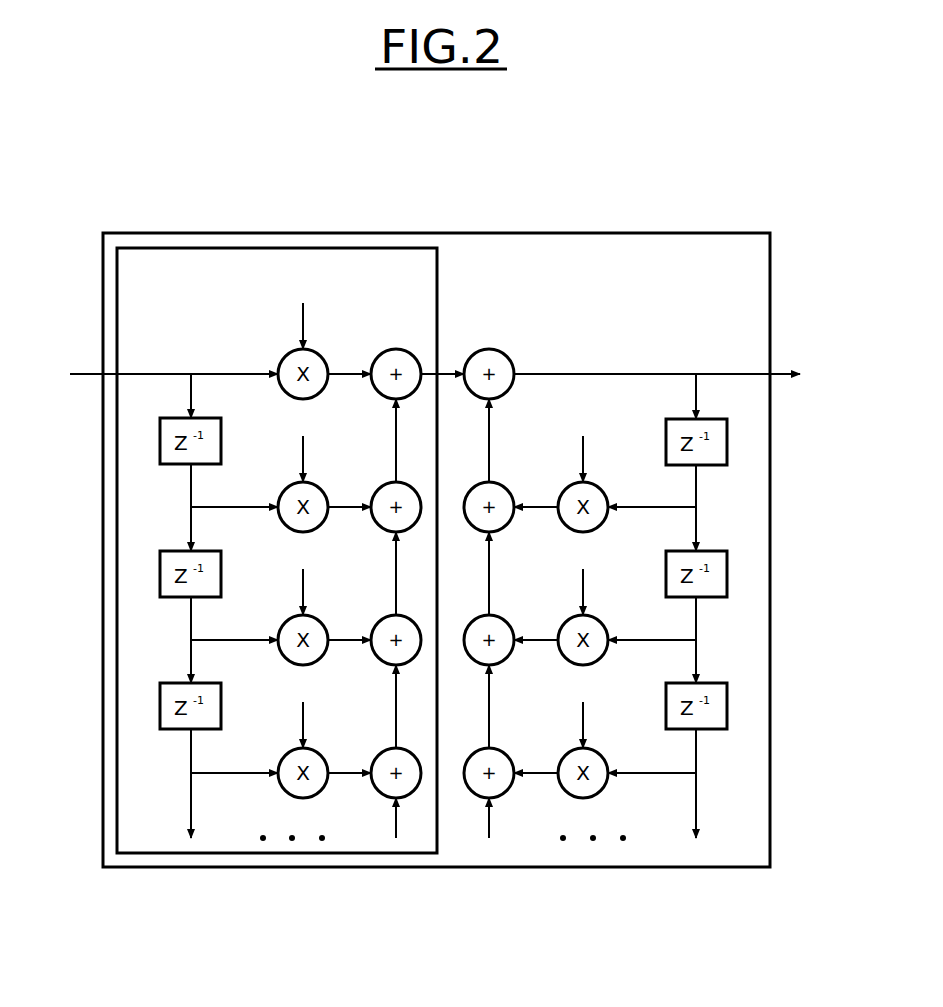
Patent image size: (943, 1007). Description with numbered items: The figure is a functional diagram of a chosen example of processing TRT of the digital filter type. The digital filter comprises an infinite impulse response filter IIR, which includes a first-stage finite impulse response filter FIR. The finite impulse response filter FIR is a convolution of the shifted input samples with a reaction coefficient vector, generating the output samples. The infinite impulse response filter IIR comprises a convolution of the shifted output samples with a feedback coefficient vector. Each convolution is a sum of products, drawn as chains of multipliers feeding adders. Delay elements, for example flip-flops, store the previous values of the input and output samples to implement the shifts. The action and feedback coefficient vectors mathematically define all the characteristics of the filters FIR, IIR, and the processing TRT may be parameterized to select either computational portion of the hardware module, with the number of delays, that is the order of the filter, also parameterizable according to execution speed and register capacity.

The processing TRT is at (760, 184).
The finite impulse response filter FIR is at (277, 550).
The infinite impulse response filter IIR is at (613, 550).